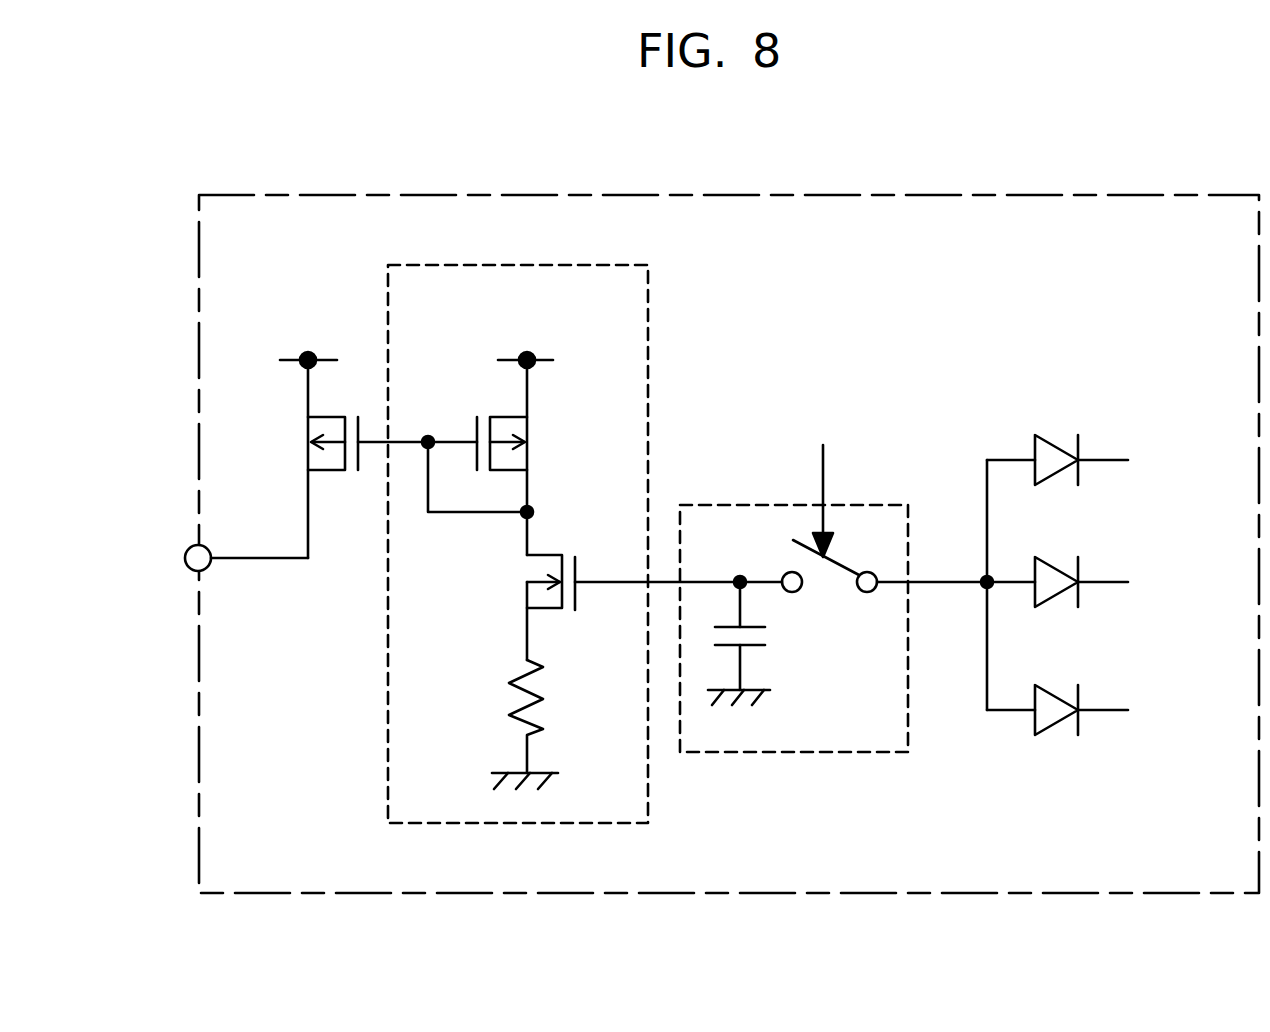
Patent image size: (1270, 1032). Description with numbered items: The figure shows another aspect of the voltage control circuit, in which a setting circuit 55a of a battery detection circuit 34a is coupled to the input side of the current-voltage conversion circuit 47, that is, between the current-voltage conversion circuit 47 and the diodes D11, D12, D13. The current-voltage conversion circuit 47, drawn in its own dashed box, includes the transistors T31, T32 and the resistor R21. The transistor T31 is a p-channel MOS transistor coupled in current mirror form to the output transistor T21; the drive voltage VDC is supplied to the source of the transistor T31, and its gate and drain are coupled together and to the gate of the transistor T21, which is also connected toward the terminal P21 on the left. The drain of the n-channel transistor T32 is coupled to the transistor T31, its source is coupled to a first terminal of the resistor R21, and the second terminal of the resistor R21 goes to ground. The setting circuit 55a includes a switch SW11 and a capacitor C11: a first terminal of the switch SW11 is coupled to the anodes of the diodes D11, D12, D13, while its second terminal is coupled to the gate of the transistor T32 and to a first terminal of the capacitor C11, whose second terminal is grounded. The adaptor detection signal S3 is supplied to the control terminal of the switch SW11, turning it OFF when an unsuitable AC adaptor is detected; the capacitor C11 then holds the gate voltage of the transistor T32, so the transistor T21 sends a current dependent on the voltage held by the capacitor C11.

The battery detection circuit 34a is at (1161, 195).
The current-voltage conversion circuit 47 is at (648, 302).
The setting circuit 55a is at (724, 505).
The drive voltage VDC is at (416, 337).
The input terminal P21 is at (188, 566).
The output transistor T21 is at (318, 468).
The transistor T31 is at (513, 467).
The transistor T32 is at (548, 556).
The resistor R21 is at (533, 702).
The capacitor C11 is at (752, 648).
The switch SW11 is at (836, 567).
The adaptor detection signal S3 is at (823, 482).
The diode D11 is at (1078, 447).
The diode D12 is at (1078, 569).
The diode D13 is at (1078, 697).